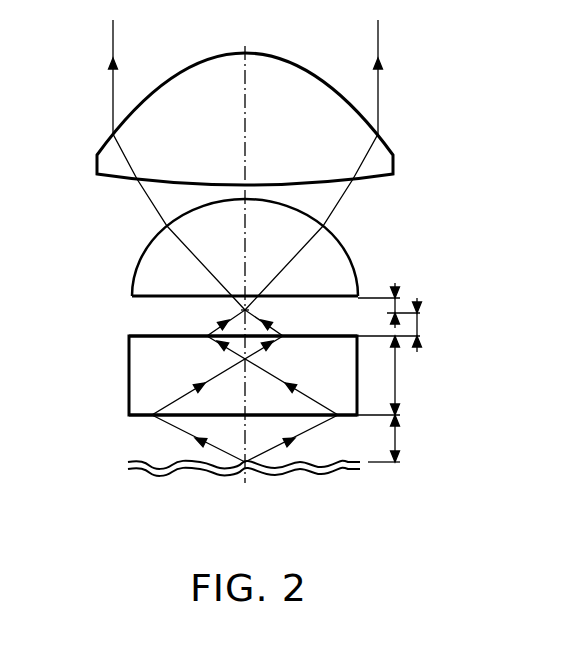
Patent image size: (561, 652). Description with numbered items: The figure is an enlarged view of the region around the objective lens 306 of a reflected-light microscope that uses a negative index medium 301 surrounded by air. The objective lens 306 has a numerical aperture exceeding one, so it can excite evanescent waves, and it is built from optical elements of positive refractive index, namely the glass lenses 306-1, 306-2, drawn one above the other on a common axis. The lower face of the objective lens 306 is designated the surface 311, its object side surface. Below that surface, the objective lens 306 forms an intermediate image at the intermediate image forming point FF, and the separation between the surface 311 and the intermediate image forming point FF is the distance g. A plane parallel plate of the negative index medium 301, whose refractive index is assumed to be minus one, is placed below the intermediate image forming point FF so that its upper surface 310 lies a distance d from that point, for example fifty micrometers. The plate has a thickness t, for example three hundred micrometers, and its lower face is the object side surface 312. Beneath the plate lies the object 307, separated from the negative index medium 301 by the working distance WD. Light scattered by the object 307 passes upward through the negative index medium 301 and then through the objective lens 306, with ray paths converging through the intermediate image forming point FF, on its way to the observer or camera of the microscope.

The objective lens 306 is at (65, 17).
The lens 306-2 is at (385, 163).
The lens 306-1 is at (323, 257).
The surface 311 is at (330, 296).
The intermediate image forming point FF is at (261, 311).
The upper surface 310 is at (328, 336).
The negative index medium 301 is at (142, 378).
The object side surface 312 is at (342, 415).
The object 307 is at (277, 470).
The distance g is at (398, 304).
The distance d is at (423, 325).
The thickness t is at (400, 375).
The working distance WD is at (413, 438).